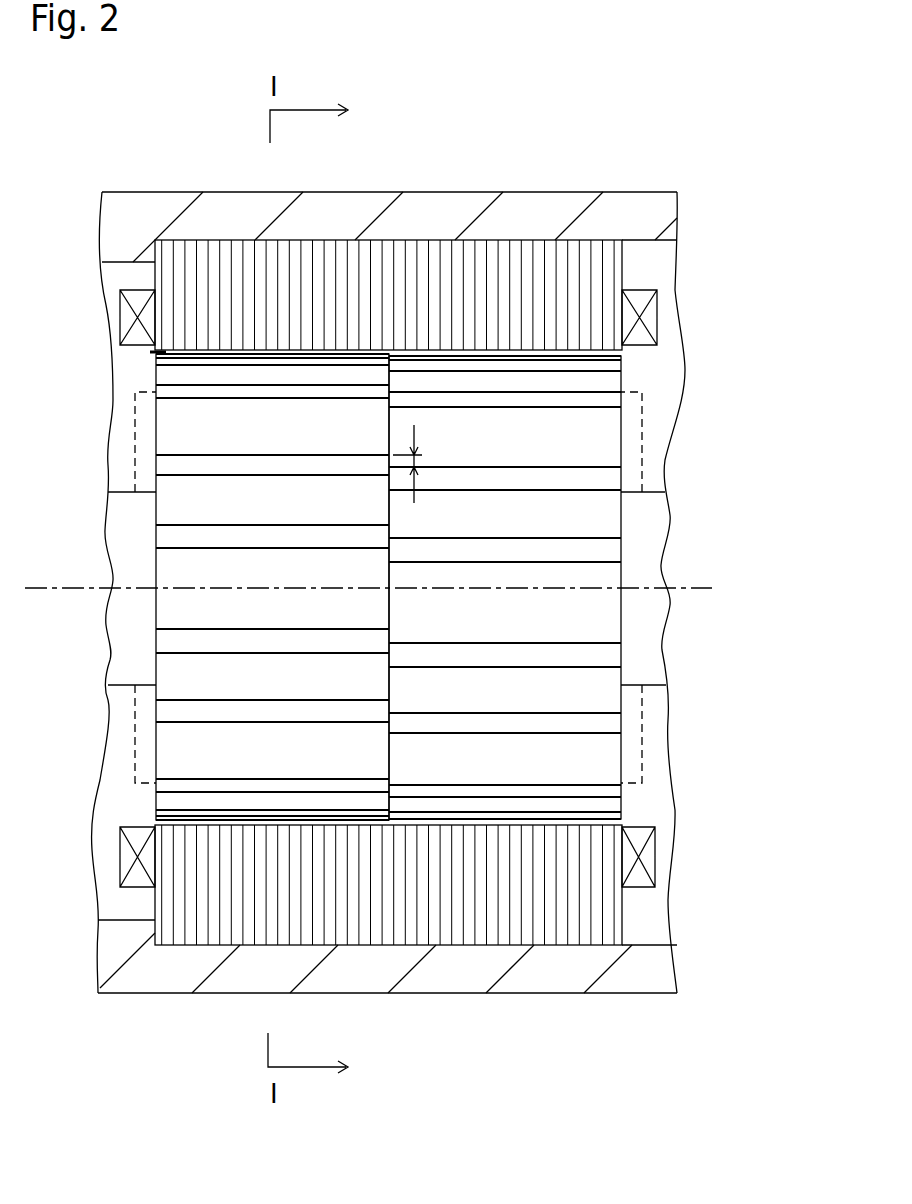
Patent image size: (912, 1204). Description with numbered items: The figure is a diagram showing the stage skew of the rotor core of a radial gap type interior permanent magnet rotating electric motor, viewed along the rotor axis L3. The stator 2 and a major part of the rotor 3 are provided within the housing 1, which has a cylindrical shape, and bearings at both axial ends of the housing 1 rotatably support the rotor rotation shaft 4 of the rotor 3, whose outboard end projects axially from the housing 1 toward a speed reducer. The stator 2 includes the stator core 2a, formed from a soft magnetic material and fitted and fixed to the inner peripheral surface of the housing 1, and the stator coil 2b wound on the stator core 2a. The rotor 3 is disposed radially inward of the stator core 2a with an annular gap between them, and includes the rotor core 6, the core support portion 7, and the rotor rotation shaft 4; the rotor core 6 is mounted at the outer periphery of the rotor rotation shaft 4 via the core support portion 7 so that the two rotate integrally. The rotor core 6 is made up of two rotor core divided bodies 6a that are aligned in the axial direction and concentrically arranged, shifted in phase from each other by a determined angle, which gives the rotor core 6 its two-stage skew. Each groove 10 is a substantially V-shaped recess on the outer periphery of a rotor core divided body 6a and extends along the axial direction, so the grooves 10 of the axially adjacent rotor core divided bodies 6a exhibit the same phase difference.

The housing 1 is at (162, 203).
The stator 2 is at (466, 574).
The stator core 2a is at (606, 272).
The stator coil 2b is at (446, 578).
The rotor 3 is at (665, 405).
The rotor rotation shaft 4 is at (127, 569).
The rotor core 6 is at (469, 433).
The rotor core divided body 6a is at (433, 418).
The core support portion 7 is at (640, 456).
The groove 10 is at (180, 467).
The rotor axis L3 is at (697, 588).